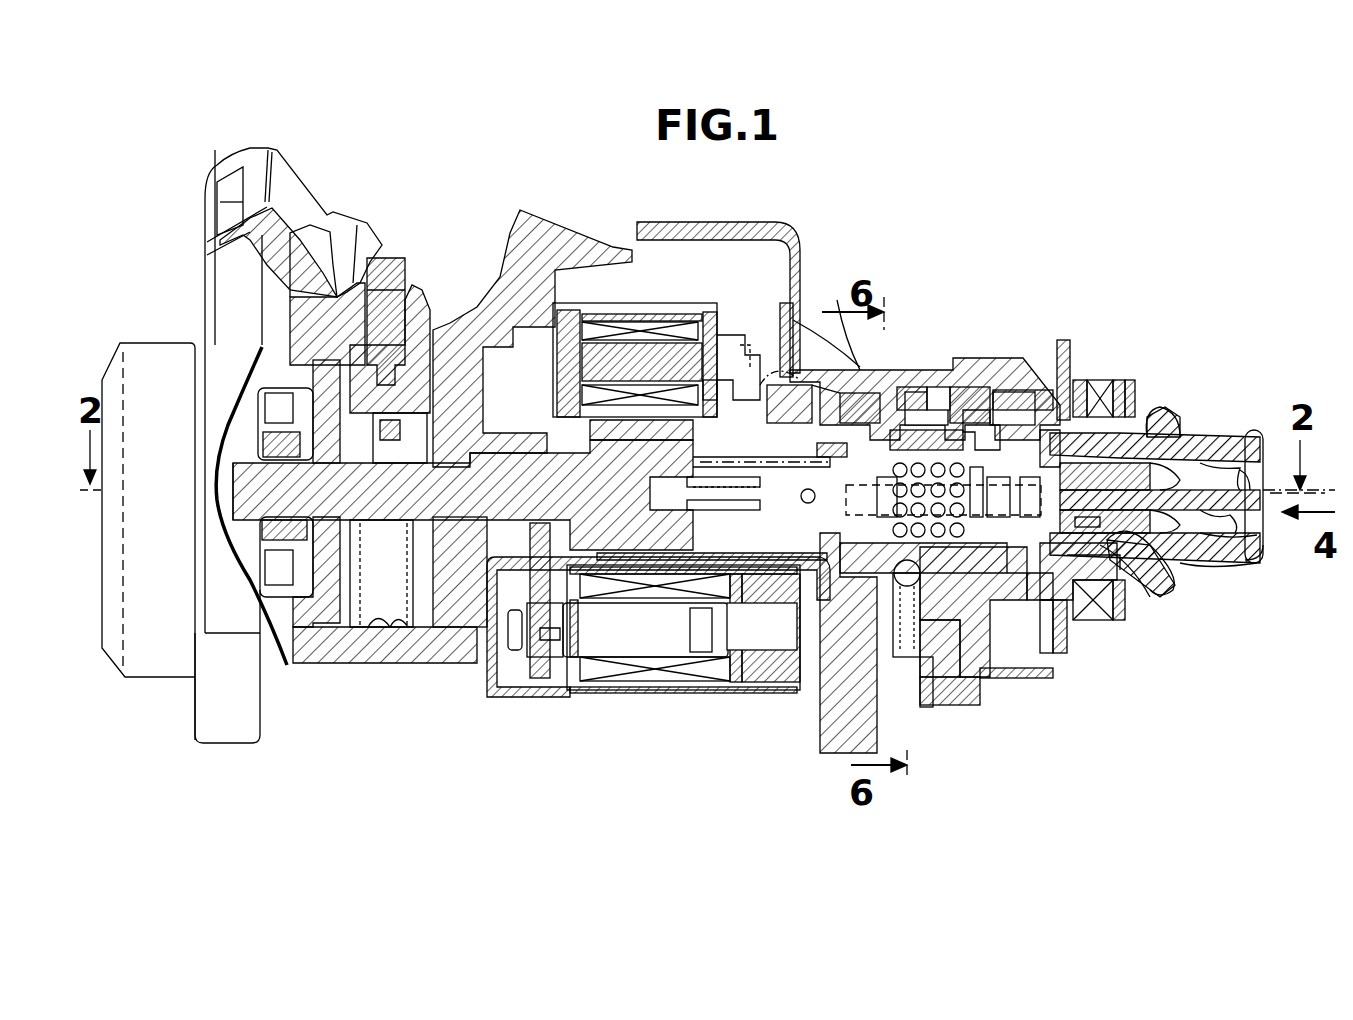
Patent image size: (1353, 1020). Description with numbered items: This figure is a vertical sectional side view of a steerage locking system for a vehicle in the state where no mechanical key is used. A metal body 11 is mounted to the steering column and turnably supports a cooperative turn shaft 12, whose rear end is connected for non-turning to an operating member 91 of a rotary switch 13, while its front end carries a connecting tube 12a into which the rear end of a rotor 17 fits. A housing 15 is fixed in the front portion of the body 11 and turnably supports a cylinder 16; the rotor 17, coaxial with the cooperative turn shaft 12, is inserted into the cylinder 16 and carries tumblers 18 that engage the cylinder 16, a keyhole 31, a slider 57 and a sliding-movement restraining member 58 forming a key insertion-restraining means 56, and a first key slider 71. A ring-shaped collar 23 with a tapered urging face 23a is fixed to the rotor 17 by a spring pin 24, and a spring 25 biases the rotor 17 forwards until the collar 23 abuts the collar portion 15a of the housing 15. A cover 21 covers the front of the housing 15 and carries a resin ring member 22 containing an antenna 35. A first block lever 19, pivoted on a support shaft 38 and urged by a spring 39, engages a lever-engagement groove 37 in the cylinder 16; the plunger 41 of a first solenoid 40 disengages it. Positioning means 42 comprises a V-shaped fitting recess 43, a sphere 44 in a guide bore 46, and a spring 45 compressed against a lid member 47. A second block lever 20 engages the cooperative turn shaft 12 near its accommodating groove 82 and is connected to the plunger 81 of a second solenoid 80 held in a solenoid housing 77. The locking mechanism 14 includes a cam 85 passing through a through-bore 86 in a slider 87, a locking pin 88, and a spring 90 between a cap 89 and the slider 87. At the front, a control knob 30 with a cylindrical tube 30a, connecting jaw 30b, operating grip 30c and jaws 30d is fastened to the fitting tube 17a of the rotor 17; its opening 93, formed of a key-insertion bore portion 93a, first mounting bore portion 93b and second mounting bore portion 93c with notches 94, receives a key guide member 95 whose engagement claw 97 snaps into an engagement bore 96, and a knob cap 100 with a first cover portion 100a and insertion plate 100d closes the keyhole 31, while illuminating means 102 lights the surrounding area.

The body 11 is at (718, 238).
The cooperative turn shaft 12 is at (498, 440).
The connecting tube 12a is at (735, 335).
The rotary switch 13 is at (242, 342).
The locking mechanism 14 is at (406, 676).
The housing 15 is at (1000, 690).
The collar portion 15a is at (817, 695).
The cylinder 16 is at (930, 385).
The rotor 17 is at (950, 395).
The fitting tube 17a is at (1065, 400).
The tumblers 18 is at (890, 505).
The first block lever 19 is at (862, 400).
The second block lever 20 is at (530, 555).
The cover 21 is at (1042, 392).
The ring member 22 is at (1103, 380).
The collar 23 is at (770, 583).
The tapered urging face 23a is at (720, 530).
The spring pin 24 is at (805, 492).
The spring 25 is at (690, 477).
The control knob 30 is at (1180, 405).
The cylindrical tube 30a is at (1120, 622).
The connecting jaw 30b is at (1187, 570).
The operating grip 30c is at (1257, 565).
The jaws 30d is at (1160, 408).
The keyhole 31 is at (870, 447).
The antenna 35 is at (1080, 380).
The lever-engagement groove 37 is at (905, 395).
The support shaft 38 is at (790, 325).
The spring 39 is at (835, 378).
The first solenoid 40 is at (652, 300).
The plunger 41 is at (710, 320).
The positioning means 42 is at (945, 680).
The fitting recess 43 is at (970, 612).
The sphere 44 is at (948, 640).
The spring 45 is at (882, 600).
The guide bore 46 is at (893, 645).
The lid member 47 is at (898, 640).
The key insertion-restraining means 56 is at (1020, 650).
The slider 57 is at (980, 388).
The sliding-movement restraining member 58 is at (1070, 615).
The first key slider 71 is at (1003, 395).
The solenoid housing 77 is at (660, 693).
The second solenoid 80 is at (700, 695).
The plunger 81 is at (560, 640).
The accommodating groove 82 is at (545, 425).
The cam 85 is at (415, 497).
The through-bore 86 is at (470, 340).
The slider 87 is at (335, 365).
The locking pin 88 is at (393, 262).
The cap 89 is at (362, 655).
The spring 90 is at (418, 650).
The operating member 91 is at (248, 535).
The opening 93 is at (1205, 435).
The key-insertion bore portion 93a is at (1095, 605).
The first mounting bore portion 93b is at (1126, 400).
The second mounting bore portion 93c is at (1225, 445).
The notches 94 is at (1262, 535).
The key guide member 95 is at (1185, 462).
The engagement bore 96 is at (1165, 585).
The engagement claw 97 is at (1125, 565).
The knob cap 100 is at (1258, 425).
The first cover portion 100a is at (1262, 470).
The insertion plate 100d is at (1197, 568).
The illuminating means 102 is at (1050, 635).